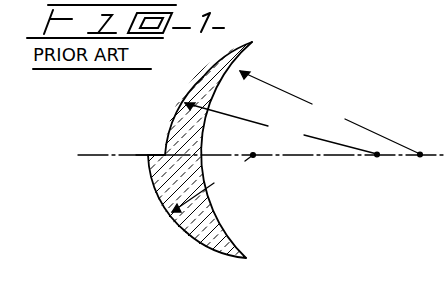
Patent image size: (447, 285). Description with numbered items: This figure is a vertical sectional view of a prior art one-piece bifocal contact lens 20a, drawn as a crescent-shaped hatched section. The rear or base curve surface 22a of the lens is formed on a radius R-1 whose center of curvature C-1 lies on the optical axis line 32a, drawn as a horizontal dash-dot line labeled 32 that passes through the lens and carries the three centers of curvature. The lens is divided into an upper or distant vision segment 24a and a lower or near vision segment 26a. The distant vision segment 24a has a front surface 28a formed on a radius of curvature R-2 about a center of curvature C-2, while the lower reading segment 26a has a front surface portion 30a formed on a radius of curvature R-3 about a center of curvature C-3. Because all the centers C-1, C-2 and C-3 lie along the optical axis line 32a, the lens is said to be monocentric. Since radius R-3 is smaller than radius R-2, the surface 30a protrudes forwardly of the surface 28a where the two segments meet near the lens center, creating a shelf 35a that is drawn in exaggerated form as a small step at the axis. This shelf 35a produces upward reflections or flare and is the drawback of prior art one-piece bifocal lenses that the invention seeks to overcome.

The bifocal contact lens 20a is at (164, 85).
The rear or base curve surface 22a is at (202, 138).
The upper or distant vision segment 24a is at (168, 119).
The lower or near vision segment 26a is at (186, 234).
The front surface 28a is at (203, 68).
The front surface portion 30a is at (156, 200).
The optical axis 32 is at (89, 154).
The optical axis line 32a is at (139, 167).
The shelf 35a is at (156, 151).
The radius of base curve surface R-1 is at (330, 112).
The radius of curvature of distant vision front surface R-2 is at (281, 128).
The radius of curvature of near vision front surface R-3 is at (212, 183).
The center of curvature of base curve surface C-1 is at (420, 151).
The center of curvature of distant vision front surface C-2 is at (378, 158).
The center of curvature of near vision front surface C-3 is at (255, 160).